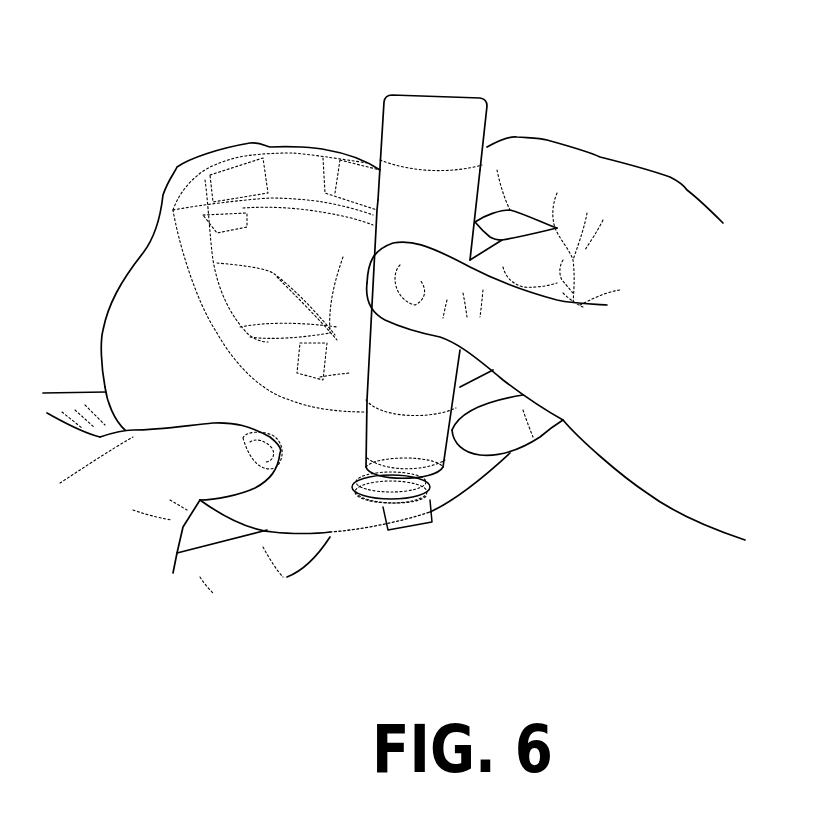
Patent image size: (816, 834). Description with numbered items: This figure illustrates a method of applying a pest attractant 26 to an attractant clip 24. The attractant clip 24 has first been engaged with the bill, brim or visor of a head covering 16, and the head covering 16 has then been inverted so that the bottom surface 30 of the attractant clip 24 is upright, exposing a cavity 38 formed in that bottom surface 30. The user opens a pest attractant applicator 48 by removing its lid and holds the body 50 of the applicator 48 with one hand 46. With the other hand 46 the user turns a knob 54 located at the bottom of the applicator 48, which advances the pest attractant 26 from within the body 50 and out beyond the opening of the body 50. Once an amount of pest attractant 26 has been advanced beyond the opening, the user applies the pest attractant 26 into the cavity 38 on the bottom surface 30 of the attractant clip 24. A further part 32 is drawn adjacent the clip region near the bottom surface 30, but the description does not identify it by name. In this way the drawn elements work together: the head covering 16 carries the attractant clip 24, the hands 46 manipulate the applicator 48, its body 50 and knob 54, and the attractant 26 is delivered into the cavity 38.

The head covering 16 is at (153, 252).
The attractant clip 24 is at (422, 520).
The pest attractant 26 is at (387, 490).
The bottom surface 30 is at (375, 478).
The tab 32 is at (407, 520).
The cavity 38 is at (365, 488).
The hand 46 is at (635, 182).
The pest attractant applicator 48 is at (407, 235).
The body 50 is at (387, 237).
The knob 54 is at (450, 107).